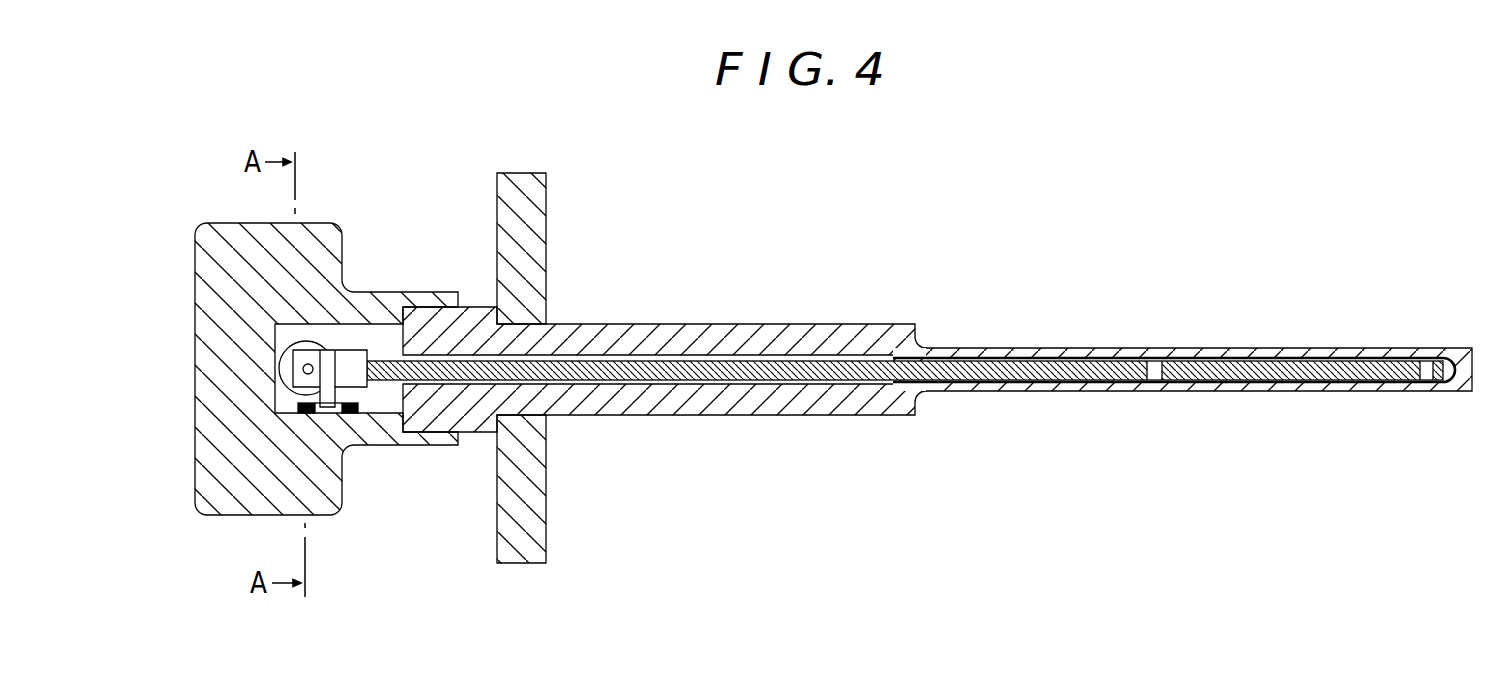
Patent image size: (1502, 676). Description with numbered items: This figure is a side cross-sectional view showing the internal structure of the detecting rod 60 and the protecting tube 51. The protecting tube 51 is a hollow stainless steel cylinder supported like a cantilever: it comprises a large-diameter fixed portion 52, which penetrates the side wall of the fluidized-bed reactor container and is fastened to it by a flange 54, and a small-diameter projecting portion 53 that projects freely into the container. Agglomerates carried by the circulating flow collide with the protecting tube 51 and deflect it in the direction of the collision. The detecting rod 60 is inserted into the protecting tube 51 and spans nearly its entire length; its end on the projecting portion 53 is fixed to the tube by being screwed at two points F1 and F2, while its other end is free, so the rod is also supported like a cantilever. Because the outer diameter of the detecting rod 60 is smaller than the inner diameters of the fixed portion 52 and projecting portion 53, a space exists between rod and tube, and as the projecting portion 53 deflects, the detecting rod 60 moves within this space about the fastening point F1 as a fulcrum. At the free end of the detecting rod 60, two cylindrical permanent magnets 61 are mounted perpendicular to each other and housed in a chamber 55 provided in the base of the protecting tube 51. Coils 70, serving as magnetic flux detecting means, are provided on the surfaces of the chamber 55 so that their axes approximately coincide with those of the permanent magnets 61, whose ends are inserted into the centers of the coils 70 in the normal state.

The protecting tube 51 is at (919, 368).
The fixed portion 52 is at (665, 333).
The projecting portion 53 is at (1225, 352).
The flange 54 is at (535, 220).
The chamber 55 is at (370, 335).
The detecting rod 60 is at (905, 371).
The permanent magnets 61 is at (308, 364).
The coils 70 is at (277, 367).
The fastening point F1 is at (1153, 391).
The fastening point F2 is at (1413, 392).